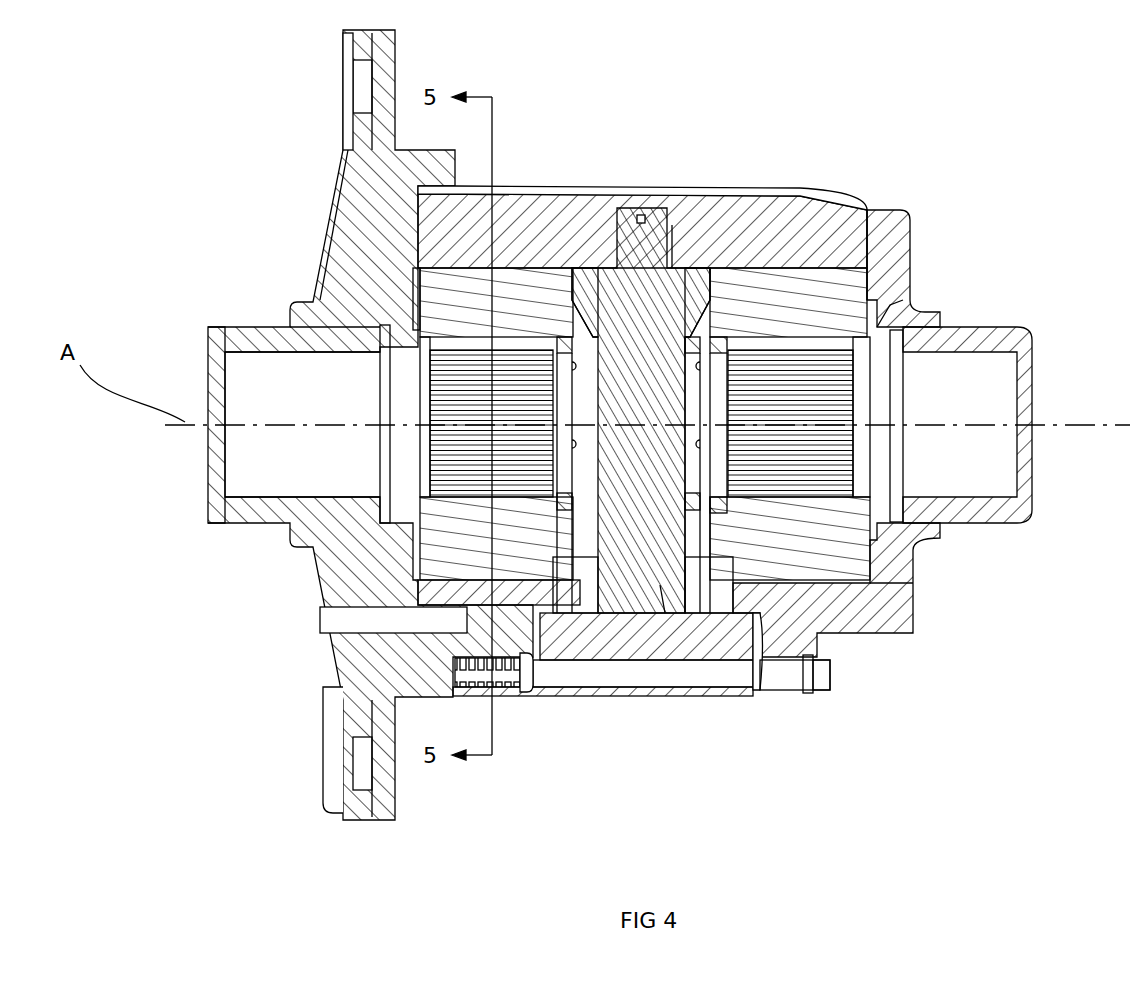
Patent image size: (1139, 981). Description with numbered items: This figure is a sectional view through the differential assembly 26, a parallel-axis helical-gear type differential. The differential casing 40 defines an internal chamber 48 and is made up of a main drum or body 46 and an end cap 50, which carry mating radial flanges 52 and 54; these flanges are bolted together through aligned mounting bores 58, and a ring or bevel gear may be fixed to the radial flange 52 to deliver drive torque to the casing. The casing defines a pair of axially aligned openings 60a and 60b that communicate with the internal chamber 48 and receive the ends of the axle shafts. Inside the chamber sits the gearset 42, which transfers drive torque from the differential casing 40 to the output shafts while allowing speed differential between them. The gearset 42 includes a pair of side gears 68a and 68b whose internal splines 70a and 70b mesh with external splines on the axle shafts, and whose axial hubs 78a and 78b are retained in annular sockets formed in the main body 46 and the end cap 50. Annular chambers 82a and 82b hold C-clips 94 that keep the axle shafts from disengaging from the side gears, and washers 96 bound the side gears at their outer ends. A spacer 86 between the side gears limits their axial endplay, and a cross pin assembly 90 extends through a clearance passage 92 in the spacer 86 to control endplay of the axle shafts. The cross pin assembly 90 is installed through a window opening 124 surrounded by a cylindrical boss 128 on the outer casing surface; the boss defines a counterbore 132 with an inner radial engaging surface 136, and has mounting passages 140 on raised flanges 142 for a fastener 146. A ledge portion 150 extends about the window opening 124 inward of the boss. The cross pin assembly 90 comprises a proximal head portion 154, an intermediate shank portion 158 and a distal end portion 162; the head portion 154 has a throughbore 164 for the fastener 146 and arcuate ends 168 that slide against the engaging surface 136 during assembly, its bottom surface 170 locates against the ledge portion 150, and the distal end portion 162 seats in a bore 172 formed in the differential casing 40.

The differential assembly 26 is at (908, 812).
The differential casing 40 is at (883, 610).
The gearset 42 is at (918, 160).
The main body 46 is at (805, 240).
The internal chamber 48 is at (830, 580).
The end cap 50 is at (360, 217).
The radial flange 52 is at (390, 810).
The radial flange 54 is at (353, 813).
The mounting bores 58 is at (385, 65).
The axially aligned opening 60a is at (973, 493).
The axially aligned opening 60b is at (265, 495).
The side gear 68a is at (815, 332).
The side gear 68b is at (478, 332).
The internal splines 70a is at (807, 470).
The internal splines 70b is at (470, 468).
The axial hub 78a is at (877, 337).
The axial hub 78b is at (385, 305).
The annular chamber 82a is at (705, 330).
The annular chamber 82b is at (583, 325).
The spacer 86 is at (572, 337).
The cross pin assembly 90 is at (660, 585).
The clearance passage 92 is at (695, 320).
The C-clips 94 is at (557, 340).
The washers 96 is at (420, 275).
The window opening 124 is at (605, 705).
The cylindrical boss 128 is at (568, 700).
The counterbore 132 is at (505, 640).
The inner radial engaging surface 136 is at (527, 615).
The mounting passages 140 is at (790, 677).
The raised flanges 142 is at (500, 640).
The fastener 146 is at (830, 677).
The ledge portion 150 is at (757, 617).
The head portion 154 is at (663, 635).
The intermediate shank portion 158 is at (630, 380).
The distal end portion 162 is at (672, 265).
The throughbore 164 is at (637, 667).
The arcuate ends 168 is at (767, 620).
The bottom surface 170 is at (583, 605).
The bore 172 is at (645, 215).